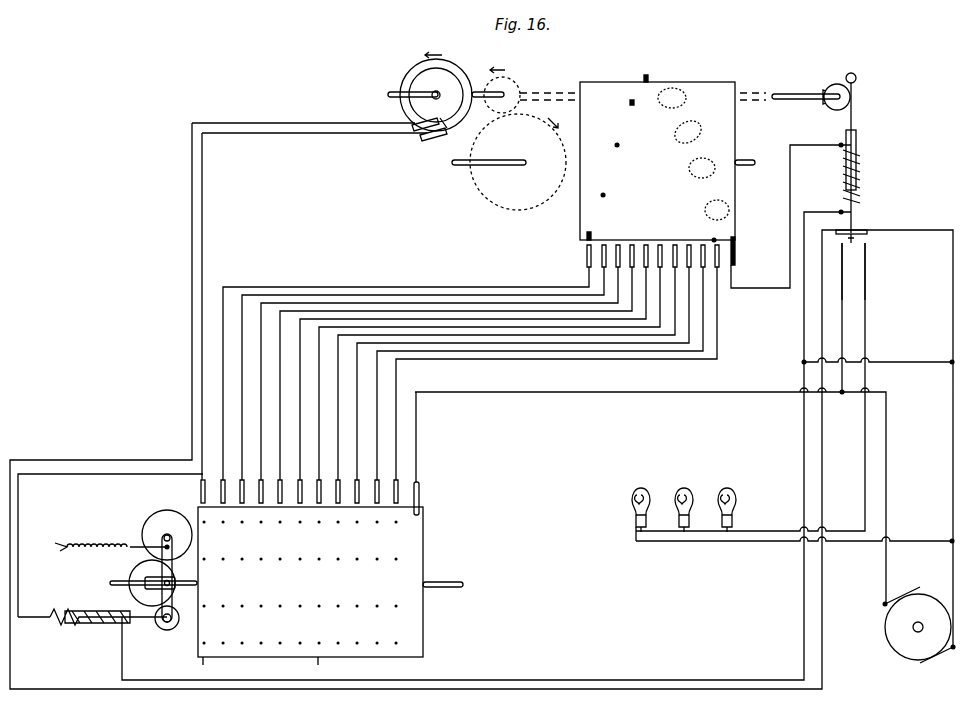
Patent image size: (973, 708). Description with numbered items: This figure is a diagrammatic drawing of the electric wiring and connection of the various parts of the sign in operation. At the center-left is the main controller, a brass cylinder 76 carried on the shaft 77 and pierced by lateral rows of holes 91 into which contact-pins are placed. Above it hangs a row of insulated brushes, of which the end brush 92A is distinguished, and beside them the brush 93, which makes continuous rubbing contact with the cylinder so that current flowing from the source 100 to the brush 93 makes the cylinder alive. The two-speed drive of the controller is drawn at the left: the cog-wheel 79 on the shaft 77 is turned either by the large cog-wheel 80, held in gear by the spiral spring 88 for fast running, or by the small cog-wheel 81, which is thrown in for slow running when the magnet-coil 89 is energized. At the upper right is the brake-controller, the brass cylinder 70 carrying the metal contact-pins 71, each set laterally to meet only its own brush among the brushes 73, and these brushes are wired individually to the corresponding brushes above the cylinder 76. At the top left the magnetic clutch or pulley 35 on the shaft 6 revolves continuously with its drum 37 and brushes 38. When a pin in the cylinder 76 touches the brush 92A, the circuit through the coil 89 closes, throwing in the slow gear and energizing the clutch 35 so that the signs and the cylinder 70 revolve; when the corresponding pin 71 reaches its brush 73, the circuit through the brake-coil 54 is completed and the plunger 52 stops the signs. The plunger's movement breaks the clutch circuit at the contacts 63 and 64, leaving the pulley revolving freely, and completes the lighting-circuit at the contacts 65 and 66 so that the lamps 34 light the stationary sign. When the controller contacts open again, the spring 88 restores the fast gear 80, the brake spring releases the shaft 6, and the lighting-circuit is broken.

The shaft 6 is at (538, 97).
The lamps 34 is at (684, 527).
The magnetic clutch or pulley 35 is at (400, 93).
The drum of the magnetic clutch 37 is at (460, 72).
The brushes of the magnetic clutch 38 is at (447, 128).
The plunger 52 is at (856, 141).
The brake-coil 54 is at (858, 186).
The clutch-circuit contact 63 is at (860, 230).
The clutch-circuit contact 64 is at (842, 230).
The lighting-circuit contact 65 is at (867, 247).
The lighting-circuit contact 66 is at (840, 247).
The brass cylinder 70 is at (667, 160).
The metal contact-pins 71 is at (596, 236).
The brushes 73 is at (636, 266).
The brass cylinder 76 is at (310, 563).
The shaft 77 is at (445, 582).
The cog-wheel 79 is at (134, 577).
The large cog-wheel 80 is at (167, 566).
The small cog-wheel 81 is at (167, 632).
The spiral spring 88 is at (110, 545).
The magnet-coil 89 is at (95, 611).
The holes 91 is at (355, 582).
The brush 92A is at (175, 491).
The brush 93 is at (419, 504).
The source 100 is at (919, 638).